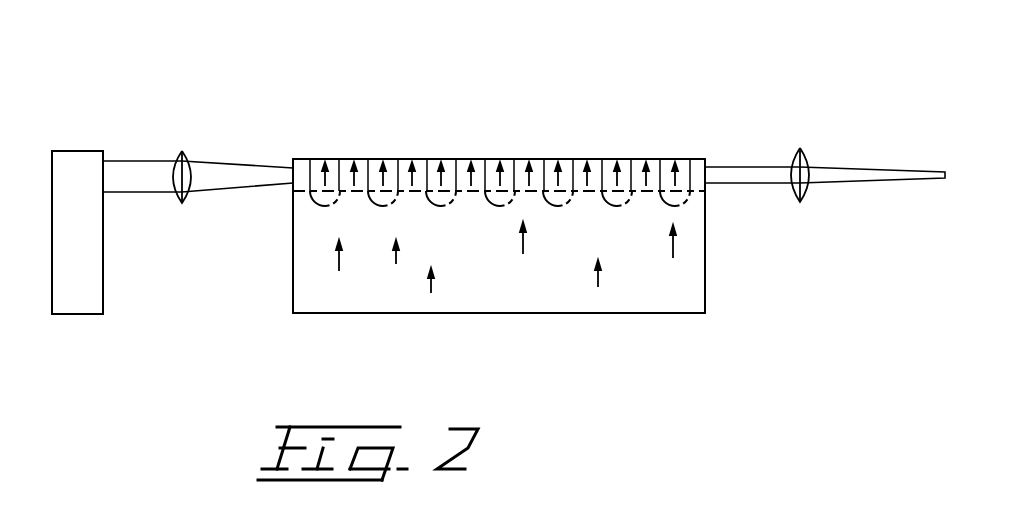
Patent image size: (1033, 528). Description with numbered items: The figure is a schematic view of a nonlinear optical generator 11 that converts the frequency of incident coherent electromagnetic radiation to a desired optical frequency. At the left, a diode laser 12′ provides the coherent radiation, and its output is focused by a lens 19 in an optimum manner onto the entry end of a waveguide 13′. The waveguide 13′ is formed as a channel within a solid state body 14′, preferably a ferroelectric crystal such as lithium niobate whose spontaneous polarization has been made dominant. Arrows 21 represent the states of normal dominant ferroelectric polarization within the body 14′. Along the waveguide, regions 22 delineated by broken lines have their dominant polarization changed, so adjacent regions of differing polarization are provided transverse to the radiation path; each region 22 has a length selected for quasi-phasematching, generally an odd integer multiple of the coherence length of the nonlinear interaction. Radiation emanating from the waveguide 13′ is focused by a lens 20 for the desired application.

The nonlinear optical generator 11 is at (498, 205).
The diode laser 12′ is at (110, 252).
The waveguide 13′ is at (508, 146).
The solid state body 14′ is at (499, 272).
The lens 19 is at (180, 153).
The lens 20 is at (802, 148).
The arrows 21 is at (657, 325).
The regions 22 is at (523, 146).